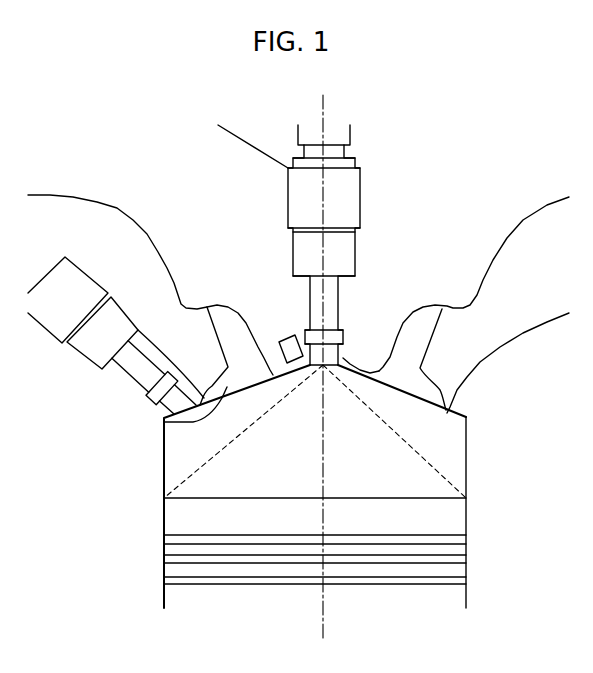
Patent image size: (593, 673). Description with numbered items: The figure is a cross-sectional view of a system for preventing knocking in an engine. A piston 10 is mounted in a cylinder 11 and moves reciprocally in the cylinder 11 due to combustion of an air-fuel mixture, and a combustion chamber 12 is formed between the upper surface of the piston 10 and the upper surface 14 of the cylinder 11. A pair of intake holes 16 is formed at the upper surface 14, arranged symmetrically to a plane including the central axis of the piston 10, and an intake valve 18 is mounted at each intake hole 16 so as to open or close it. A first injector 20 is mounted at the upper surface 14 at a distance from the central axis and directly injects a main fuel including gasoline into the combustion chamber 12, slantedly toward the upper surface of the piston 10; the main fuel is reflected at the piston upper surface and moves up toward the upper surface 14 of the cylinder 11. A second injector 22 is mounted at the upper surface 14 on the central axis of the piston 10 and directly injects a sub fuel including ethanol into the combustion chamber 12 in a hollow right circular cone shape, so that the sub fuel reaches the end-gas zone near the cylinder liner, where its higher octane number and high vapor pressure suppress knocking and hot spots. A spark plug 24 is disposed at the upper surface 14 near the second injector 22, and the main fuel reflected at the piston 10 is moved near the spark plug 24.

The piston 10 is at (322, 486).
The cylinder 11 is at (164, 489).
The combustion chamber 12 is at (453, 441).
The upper surface of the cylinder 14 is at (352, 362).
The intake hole 16 is at (156, 272).
The intake valve 18 is at (164, 422).
The first injector 20 is at (92, 363).
The second injector 22 is at (350, 250).
The spark plug 24 is at (287, 338).